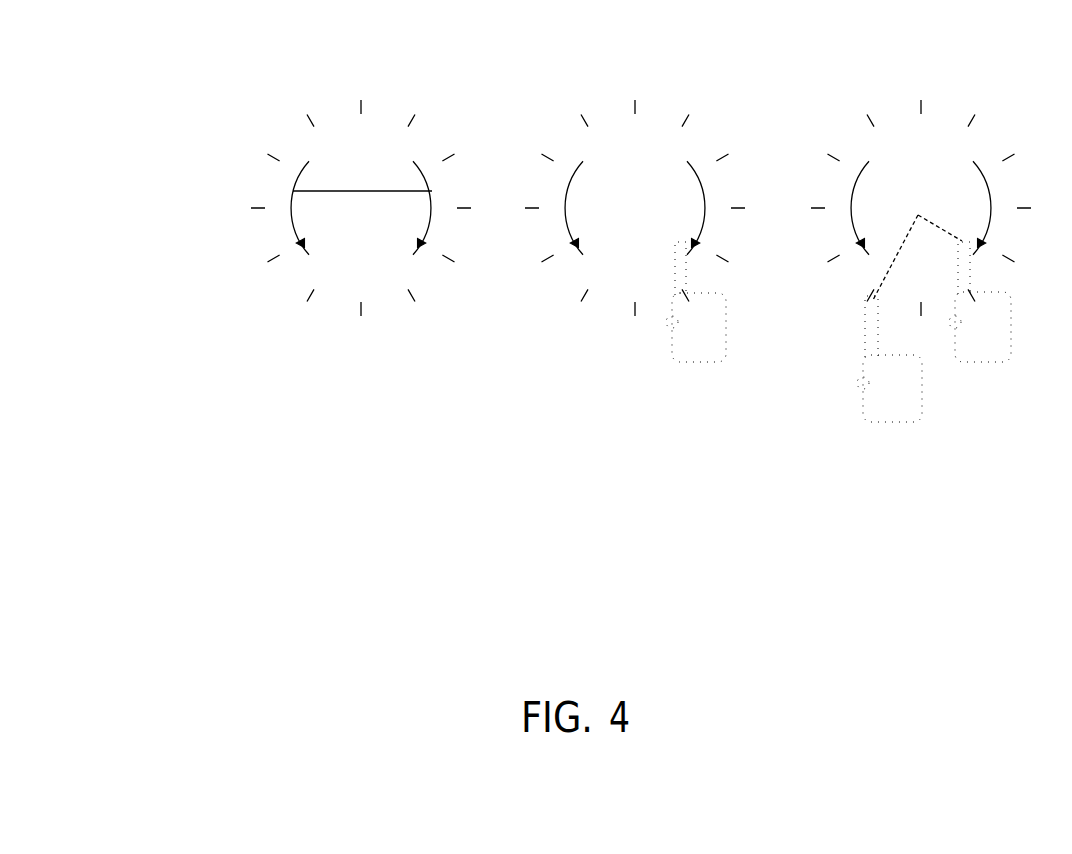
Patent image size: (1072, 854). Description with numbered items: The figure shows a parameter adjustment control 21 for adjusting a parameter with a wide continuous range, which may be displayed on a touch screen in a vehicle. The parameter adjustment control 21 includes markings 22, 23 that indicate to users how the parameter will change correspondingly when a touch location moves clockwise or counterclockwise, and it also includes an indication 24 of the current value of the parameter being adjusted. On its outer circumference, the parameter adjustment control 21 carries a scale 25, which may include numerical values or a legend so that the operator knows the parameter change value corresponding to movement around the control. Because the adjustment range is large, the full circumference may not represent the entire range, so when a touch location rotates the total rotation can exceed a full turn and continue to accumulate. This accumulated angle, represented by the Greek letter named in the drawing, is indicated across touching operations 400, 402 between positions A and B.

The parameter adjustment control 21 is at (272, 239).
The marking 22 is at (293, 169).
The marking 23 is at (293, 191).
The indication of current value 24 is at (330, 215).
The scale 25 is at (312, 291).
The touching operation 400 is at (586, 81).
The touching operation 402 is at (884, 90).